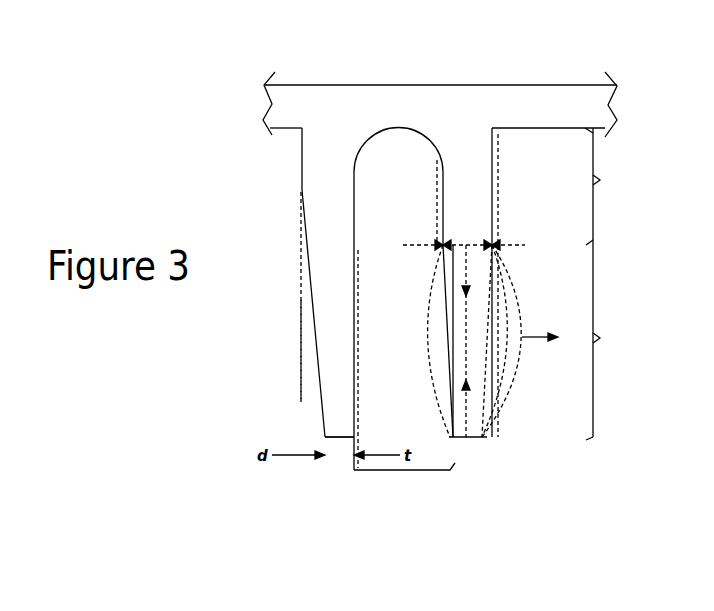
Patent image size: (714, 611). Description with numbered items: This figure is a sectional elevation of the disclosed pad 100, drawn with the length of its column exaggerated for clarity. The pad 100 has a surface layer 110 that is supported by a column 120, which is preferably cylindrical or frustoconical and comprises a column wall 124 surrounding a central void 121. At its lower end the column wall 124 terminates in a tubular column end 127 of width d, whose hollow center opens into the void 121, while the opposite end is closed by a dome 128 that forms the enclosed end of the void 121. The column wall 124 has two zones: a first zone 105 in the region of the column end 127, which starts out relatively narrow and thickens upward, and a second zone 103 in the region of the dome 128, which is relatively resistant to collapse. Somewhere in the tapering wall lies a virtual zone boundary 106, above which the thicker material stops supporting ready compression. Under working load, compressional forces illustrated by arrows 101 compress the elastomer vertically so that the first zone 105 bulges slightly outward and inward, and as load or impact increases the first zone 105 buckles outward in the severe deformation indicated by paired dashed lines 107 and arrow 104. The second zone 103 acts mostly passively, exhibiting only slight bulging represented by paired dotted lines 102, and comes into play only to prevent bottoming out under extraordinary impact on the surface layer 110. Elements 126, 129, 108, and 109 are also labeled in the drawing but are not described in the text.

The pad 100 is at (488, 54).
The surface layer 110 is at (331, 86).
The column 120 is at (308, 213).
The central void 121 is at (383, 203).
The column wall 124 is at (307, 251).
The sidewall liner 126 is at (302, 306).
The column end 127 is at (325, 437).
The dome 128 is at (391, 130).
The inner liner of cap 129 is at (358, 350).
The base layer 108 is at (397, 470).
The arrows 101 is at (472, 437).
The paired dotted lines 102 is at (503, 177).
The second zone 103 is at (566, 282).
The first zone 105 is at (613, 342).
The virtual zone boundary 106 is at (510, 232).
The arrow 104 is at (538, 350).
The paired dashed lines 107 is at (510, 398).
The left flow boundary 109 is at (426, 335).